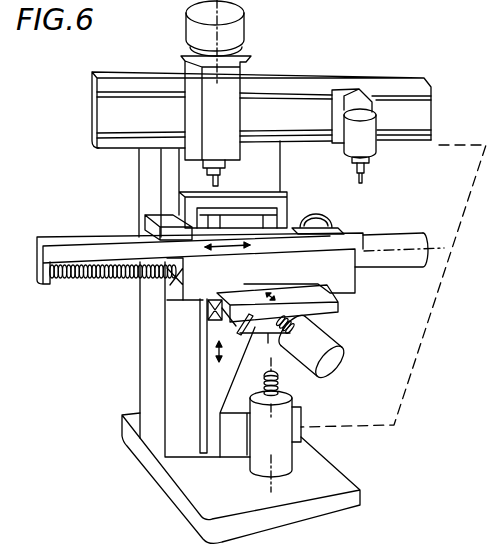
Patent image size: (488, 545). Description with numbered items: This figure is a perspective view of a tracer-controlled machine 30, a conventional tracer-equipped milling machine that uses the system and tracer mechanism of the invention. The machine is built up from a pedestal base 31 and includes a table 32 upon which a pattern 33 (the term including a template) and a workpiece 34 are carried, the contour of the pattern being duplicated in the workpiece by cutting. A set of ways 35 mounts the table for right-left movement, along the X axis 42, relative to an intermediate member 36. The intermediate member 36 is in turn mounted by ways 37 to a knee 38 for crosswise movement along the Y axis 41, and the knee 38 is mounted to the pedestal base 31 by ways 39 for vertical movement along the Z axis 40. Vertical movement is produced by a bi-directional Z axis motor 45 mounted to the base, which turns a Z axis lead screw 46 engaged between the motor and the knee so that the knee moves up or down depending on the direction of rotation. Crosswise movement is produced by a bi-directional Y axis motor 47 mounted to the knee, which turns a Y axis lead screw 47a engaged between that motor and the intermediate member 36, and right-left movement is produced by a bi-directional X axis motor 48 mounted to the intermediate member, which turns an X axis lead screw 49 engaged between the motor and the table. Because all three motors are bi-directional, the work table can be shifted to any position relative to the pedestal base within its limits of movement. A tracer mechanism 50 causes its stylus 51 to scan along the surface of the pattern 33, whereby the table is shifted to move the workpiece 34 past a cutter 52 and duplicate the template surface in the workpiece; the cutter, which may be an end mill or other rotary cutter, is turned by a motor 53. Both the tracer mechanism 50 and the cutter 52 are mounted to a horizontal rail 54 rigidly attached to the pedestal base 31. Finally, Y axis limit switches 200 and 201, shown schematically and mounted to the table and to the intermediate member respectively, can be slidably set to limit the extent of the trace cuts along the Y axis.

The tracer-controlled machine 30 is at (92, 381).
The pedestal base 31 is at (173, 426).
The table 32 is at (66, 232).
The pattern 33 is at (329, 216).
The workpiece 34 is at (140, 220).
The ways 35 is at (165, 276).
The intermediate member 36 is at (178, 295).
The ways 37 is at (208, 298).
The knee 38 is at (213, 382).
The ways 39 is at (230, 450).
The Z axis 40 is at (244, 35).
The Y axis 41 is at (360, 389).
The X axis 42 is at (424, 233).
The Z axis motor 45 is at (283, 448).
The Z axis lead screw 46 is at (287, 318).
The Y axis motor 47 is at (353, 351).
The Y axis lead screw 47a is at (340, 305).
The X axis motor 48 is at (387, 234).
The X axis lead screw 49 is at (78, 279).
The tracer mechanism 50 is at (379, 128).
The stylus 51 is at (366, 172).
The cutter 52 is at (222, 184).
The motor 53 is at (244, 21).
The horizontal rail 54 is at (297, 103).
The Y axis limit switch 200 is at (202, 316).
The Y axis limit switch 201 is at (235, 326).